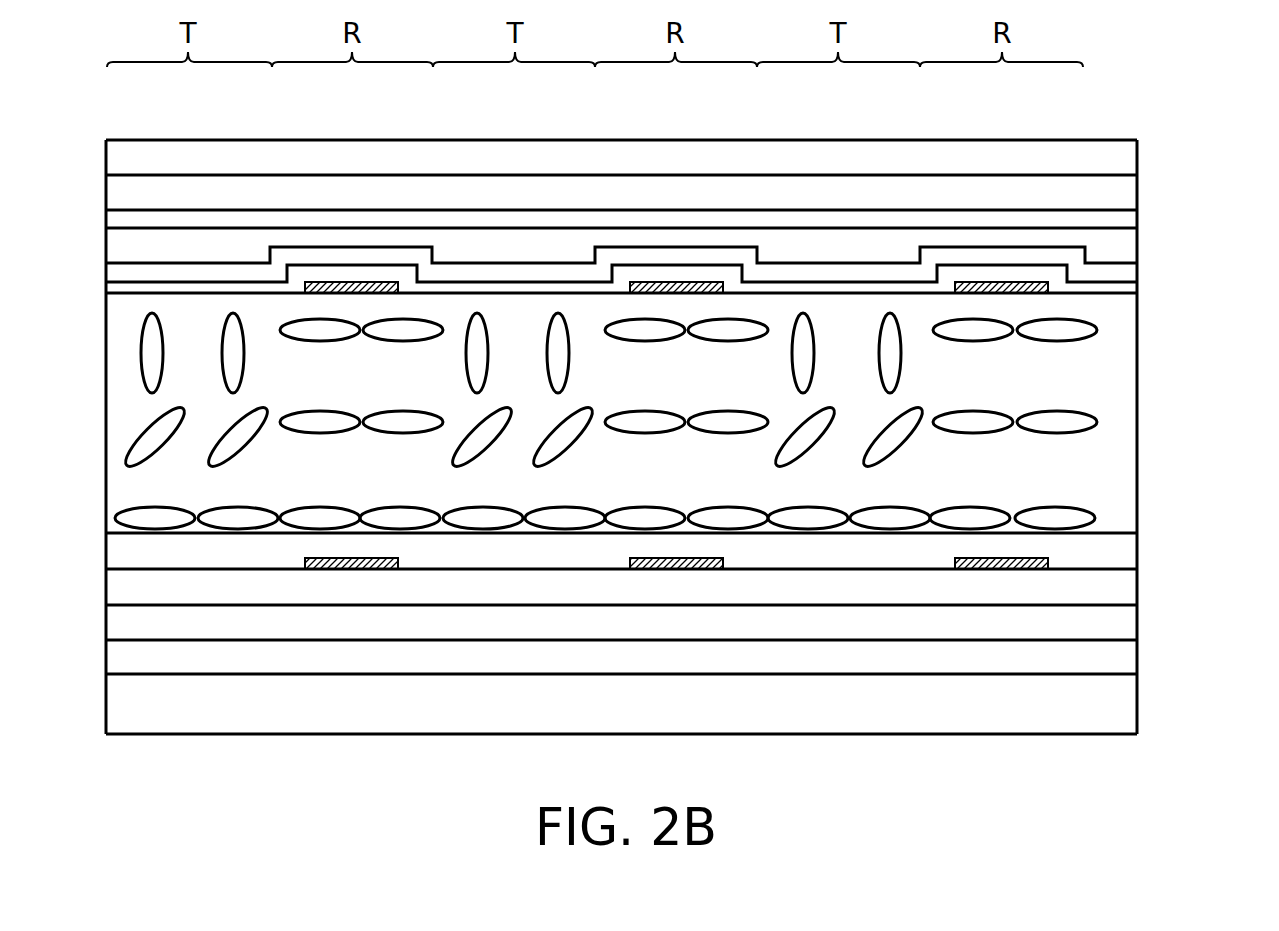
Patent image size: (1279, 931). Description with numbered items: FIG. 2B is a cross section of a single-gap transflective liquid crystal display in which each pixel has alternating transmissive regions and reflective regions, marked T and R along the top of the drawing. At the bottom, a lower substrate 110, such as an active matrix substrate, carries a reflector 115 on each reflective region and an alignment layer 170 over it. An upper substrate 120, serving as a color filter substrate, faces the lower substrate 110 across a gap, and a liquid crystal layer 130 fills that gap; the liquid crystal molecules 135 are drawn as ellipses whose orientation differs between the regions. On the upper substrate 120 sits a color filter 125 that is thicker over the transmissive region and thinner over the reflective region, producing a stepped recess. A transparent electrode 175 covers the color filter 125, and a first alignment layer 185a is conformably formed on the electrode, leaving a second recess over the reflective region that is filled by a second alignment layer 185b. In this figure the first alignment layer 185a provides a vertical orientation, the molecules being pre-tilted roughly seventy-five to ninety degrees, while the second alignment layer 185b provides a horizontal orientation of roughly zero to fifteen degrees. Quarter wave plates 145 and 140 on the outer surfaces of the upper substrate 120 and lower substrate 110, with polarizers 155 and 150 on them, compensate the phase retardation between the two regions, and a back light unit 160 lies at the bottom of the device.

The polarizer 155 is at (1115, 161).
The quarter wave plate 145 is at (1115, 194).
The upper substrate 120 is at (1115, 225).
The color filter 125 is at (1115, 253).
The transparent electrode 175 is at (1115, 281).
The first alignment layer 185a is at (1110, 288).
The second alignment layer 185b is at (1010, 293).
The liquid crystal layer 130 is at (1115, 390).
The liquid crystal molecules 135 is at (1063, 422).
The reflector 115 is at (1027, 560).
The alignment layer 170 is at (1115, 556).
The lower substrate 110 is at (1115, 591).
The quarter wave plate 140 is at (1115, 626).
The polarizer 150 is at (1115, 661).
The back light unit 160 is at (1115, 705).